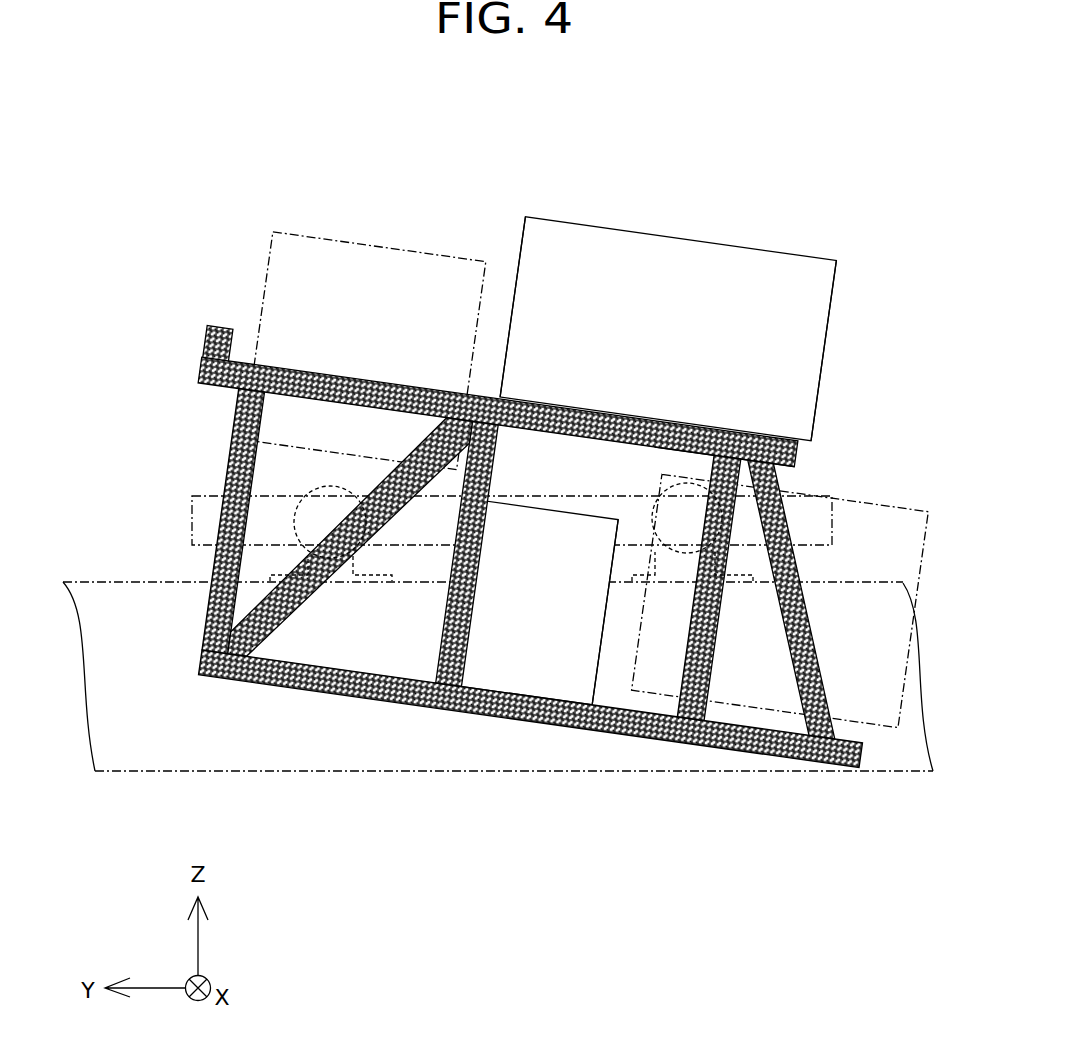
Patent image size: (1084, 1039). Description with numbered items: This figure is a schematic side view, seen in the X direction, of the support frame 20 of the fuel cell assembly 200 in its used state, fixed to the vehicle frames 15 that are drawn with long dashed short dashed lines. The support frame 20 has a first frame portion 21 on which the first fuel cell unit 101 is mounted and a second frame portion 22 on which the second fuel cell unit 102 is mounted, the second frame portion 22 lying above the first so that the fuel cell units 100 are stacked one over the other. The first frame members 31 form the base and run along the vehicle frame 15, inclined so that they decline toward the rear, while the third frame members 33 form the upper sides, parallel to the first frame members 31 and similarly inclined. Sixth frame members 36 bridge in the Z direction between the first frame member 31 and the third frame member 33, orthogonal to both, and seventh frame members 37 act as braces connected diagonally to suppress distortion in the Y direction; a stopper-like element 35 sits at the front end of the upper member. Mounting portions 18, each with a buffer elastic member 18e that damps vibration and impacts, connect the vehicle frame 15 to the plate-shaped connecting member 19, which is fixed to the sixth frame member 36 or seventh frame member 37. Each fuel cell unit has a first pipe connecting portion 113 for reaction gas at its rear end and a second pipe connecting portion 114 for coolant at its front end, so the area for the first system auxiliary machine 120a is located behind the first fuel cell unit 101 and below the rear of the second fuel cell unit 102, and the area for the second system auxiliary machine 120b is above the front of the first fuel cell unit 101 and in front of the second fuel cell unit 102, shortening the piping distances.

The fuel cell assembly 200 is at (217, 189).
The support frame 20 is at (178, 262).
The first frame portion 21 is at (187, 603).
The second frame portion 22 is at (320, 345).
The first frame member 31 is at (413, 690).
The third frame member 33 is at (690, 440).
The stopper 35 is at (207, 333).
The sixth frame member 36 is at (232, 480).
The seventh frame member 37 is at (793, 578).
The vehicle frame 15 is at (148, 752).
The mounting portion 18 is at (318, 480).
The buffer elastic member 18e is at (315, 508).
The connecting member 19 is at (835, 532).
The fuel cell unit 100 is at (559, 530).
The first fuel cell unit 101 is at (537, 640).
The second fuel cell unit 102 is at (760, 246).
The first pipe connecting portion 113 is at (830, 308).
The second pipe connecting portion 114 is at (518, 254).
The first system auxiliary machine 120a is at (880, 707).
The second system auxiliary machine 120b is at (333, 264).